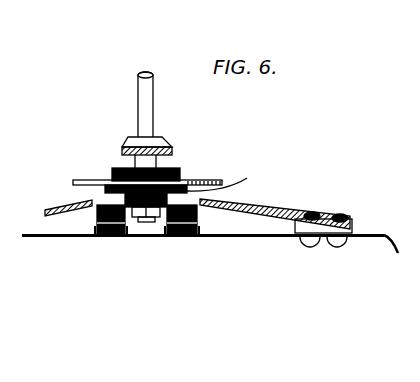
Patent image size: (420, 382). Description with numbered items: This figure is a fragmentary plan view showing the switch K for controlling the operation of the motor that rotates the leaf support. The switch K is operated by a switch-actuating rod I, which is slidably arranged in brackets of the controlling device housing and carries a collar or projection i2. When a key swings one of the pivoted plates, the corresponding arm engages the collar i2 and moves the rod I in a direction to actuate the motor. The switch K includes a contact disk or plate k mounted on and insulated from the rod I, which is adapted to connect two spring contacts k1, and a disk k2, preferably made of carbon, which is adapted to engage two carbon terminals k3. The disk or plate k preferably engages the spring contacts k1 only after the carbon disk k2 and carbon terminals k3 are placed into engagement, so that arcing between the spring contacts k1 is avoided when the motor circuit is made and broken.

The switch-actuating rod I is at (137, 85).
The collar or projection i2 is at (135, 156).
The spring contacts k1 is at (168, 141).
The contact disk or plate k is at (215, 178).
The disk k2 is at (227, 182).
The carbon terminals k3 is at (176, 237).
The switch K is at (210, 248).